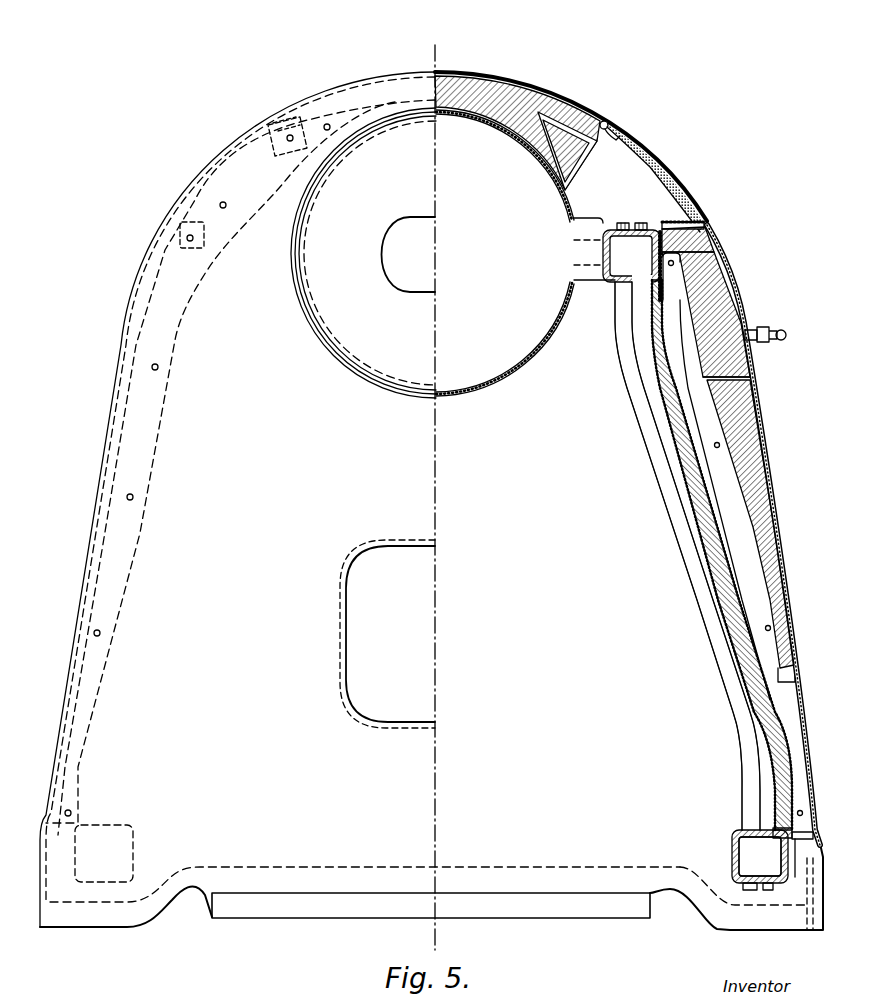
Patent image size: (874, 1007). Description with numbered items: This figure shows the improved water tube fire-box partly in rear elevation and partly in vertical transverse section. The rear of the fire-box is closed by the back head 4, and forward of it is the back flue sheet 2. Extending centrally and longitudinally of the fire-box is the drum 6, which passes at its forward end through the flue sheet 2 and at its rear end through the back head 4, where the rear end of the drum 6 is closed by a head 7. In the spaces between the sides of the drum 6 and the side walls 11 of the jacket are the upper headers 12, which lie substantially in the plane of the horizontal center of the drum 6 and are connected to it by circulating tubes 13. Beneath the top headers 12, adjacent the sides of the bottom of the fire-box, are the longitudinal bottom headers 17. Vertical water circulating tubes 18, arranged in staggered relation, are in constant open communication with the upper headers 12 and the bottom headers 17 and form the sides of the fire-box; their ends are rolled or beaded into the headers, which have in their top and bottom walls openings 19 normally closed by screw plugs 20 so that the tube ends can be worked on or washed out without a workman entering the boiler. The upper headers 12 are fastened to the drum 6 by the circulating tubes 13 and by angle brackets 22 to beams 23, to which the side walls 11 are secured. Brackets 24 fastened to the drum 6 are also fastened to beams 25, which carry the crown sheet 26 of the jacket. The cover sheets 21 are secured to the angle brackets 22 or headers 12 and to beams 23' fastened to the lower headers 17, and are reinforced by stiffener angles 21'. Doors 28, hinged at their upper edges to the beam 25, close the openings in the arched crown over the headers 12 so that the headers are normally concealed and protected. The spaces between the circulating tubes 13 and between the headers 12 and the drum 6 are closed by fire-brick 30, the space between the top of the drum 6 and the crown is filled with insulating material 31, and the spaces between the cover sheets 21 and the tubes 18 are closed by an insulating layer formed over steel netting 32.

The back flue sheet 2 is at (678, 687).
The back head 4 is at (360, 499).
The drum 6 is at (486, 380).
The head 7 is at (363, 253).
The side walls 11 is at (758, 418).
The upper headers 12 is at (640, 252).
The circulating tubes 13 is at (593, 270).
The bottom headers 17 is at (746, 853).
The vertical water circulating tubes 18 is at (661, 386).
The openings 19 is at (623, 225).
The screw plugs 20 is at (641, 223).
The cover sheets 21 is at (719, 466).
The stiffener angles 21' is at (755, 522).
The angle brackets 22 is at (709, 242).
The beams 23 is at (705, 226).
The beams 23' is at (749, 820).
The brackets 24 is at (584, 167).
The beams 25 is at (597, 121).
The crown sheet 26 is at (528, 92).
The doors 28 is at (645, 160).
The fire-brick 30 is at (585, 229).
The insulating material 31 is at (523, 78).
The steel netting 32 is at (651, 340).